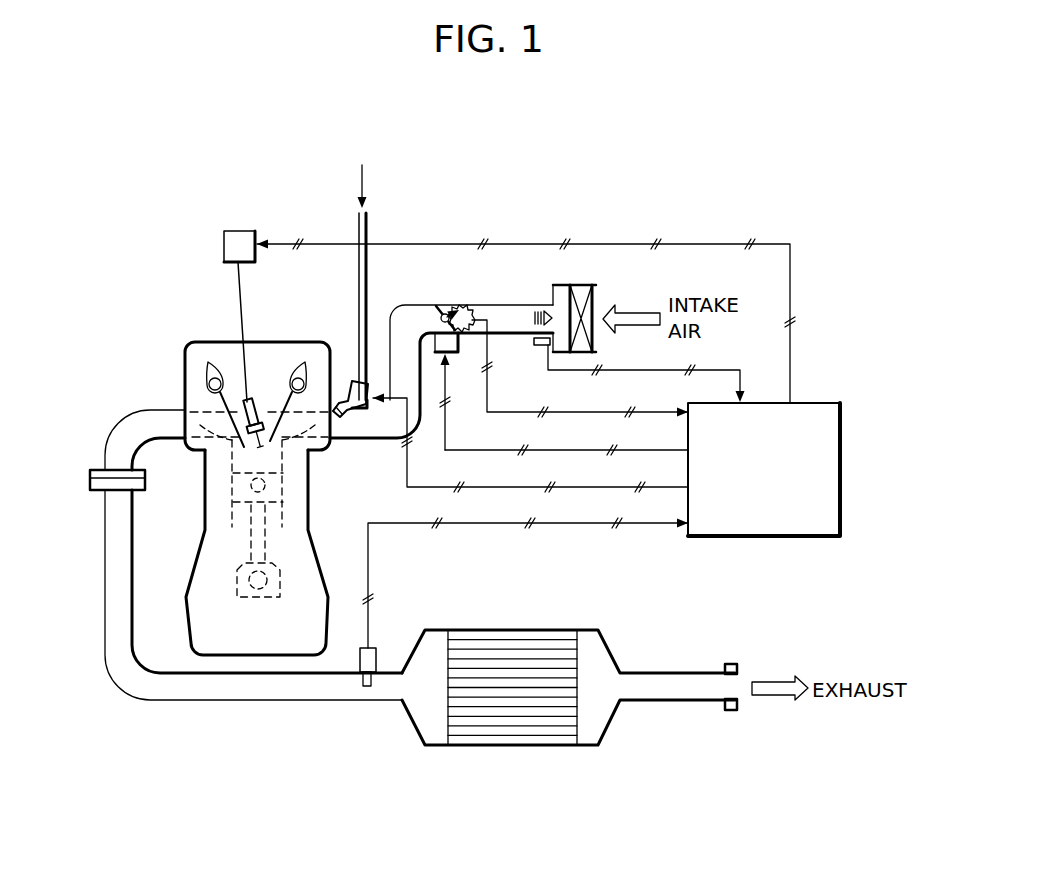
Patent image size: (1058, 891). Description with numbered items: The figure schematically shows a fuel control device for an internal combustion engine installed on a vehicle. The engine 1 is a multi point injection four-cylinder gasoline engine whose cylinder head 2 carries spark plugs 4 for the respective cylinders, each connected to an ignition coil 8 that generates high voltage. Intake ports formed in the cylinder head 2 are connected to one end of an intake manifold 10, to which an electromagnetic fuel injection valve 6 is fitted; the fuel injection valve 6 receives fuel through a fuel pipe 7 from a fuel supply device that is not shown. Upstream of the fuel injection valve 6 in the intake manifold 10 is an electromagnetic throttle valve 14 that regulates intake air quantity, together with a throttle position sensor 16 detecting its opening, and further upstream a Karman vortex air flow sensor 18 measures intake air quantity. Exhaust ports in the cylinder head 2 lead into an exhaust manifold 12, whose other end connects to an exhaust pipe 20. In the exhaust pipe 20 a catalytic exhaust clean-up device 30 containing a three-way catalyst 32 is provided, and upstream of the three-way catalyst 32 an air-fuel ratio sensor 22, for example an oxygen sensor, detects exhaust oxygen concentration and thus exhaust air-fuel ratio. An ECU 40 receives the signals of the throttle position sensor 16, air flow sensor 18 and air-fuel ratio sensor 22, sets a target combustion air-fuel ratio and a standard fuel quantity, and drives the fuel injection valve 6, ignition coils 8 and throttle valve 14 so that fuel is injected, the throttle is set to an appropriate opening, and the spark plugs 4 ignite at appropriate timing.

The engine 1 is at (183, 340).
The cylinder head 2 is at (211, 342).
The spark plug 4 is at (243, 412).
The fuel injection valve 6 is at (349, 382).
The fuel pipe 7 is at (370, 228).
The ignition coil 8 is at (237, 231).
The intake manifold 10 is at (361, 432).
The exhaust manifold 12 is at (118, 442).
The throttle valve 14 is at (445, 303).
The throttle position sensor 16 is at (472, 308).
The air flow sensor 18 is at (535, 353).
The exhaust pipe 20 is at (237, 702).
The air-fuel ratio sensor 22 is at (374, 655).
The catalytic exhaust clean-up device 30 is at (512, 627).
The three-way catalyst 32 is at (474, 637).
The ECU 40 is at (843, 423).